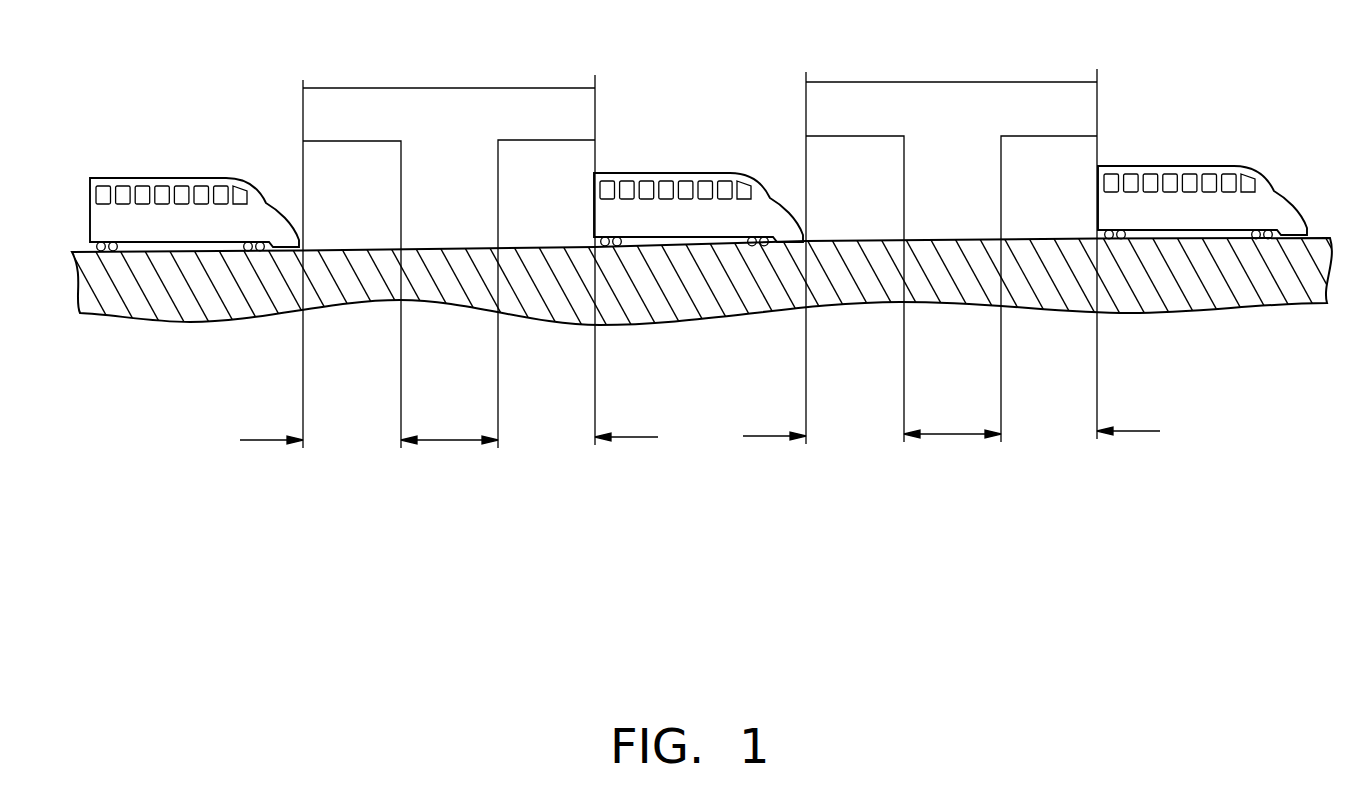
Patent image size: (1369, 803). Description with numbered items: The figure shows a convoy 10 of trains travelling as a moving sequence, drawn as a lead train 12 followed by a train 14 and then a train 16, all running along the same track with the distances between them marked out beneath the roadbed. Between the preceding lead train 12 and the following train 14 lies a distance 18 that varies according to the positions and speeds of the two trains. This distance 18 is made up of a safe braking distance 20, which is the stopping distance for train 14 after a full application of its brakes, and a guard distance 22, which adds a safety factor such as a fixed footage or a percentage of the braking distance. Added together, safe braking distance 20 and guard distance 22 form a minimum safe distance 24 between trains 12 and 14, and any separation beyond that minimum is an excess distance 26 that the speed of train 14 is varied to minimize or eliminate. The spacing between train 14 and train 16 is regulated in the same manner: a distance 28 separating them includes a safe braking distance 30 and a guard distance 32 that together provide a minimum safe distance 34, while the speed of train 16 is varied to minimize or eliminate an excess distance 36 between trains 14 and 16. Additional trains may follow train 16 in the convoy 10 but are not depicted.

The convoy 10 is at (1143, 547).
The lead train 12 is at (1208, 166).
The train 14 is at (695, 172).
The train 16 is at (187, 177).
The distance 18 is at (960, 81).
The safe braking distance 20 is at (762, 437).
The guard distance 22 is at (1143, 432).
The minimum safe distance 24 is at (1030, 135).
The excess distance 26 is at (948, 435).
The distance 28 is at (458, 87).
The safe braking distance 30 is at (257, 441).
The guard distance 32 is at (640, 438).
The minimum safe distance 34 is at (530, 140).
The excess distance 36 is at (445, 441).